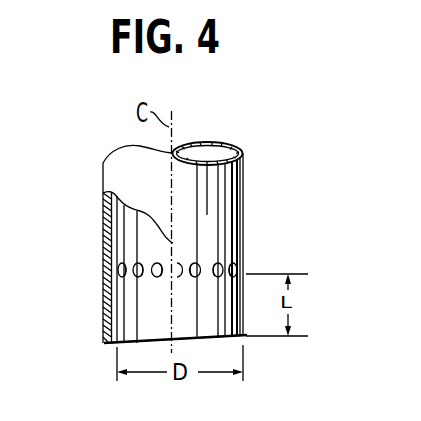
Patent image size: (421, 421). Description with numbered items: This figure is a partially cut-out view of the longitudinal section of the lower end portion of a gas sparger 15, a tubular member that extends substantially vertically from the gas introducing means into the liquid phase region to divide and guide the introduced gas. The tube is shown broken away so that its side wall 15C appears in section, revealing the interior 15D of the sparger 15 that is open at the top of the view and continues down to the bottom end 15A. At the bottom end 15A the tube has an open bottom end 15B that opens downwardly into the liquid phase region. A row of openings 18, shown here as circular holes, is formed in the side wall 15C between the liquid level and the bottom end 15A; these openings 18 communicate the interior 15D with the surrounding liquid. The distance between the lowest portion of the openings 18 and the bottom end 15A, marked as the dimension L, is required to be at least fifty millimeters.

The gas sparger 15 is at (180, 234).
The bottom end 15A is at (245, 340).
The open bottom end 15B is at (133, 318).
The side wall 15C is at (112, 233).
The interior 15D is at (208, 152).
The openings 18 is at (197, 262).